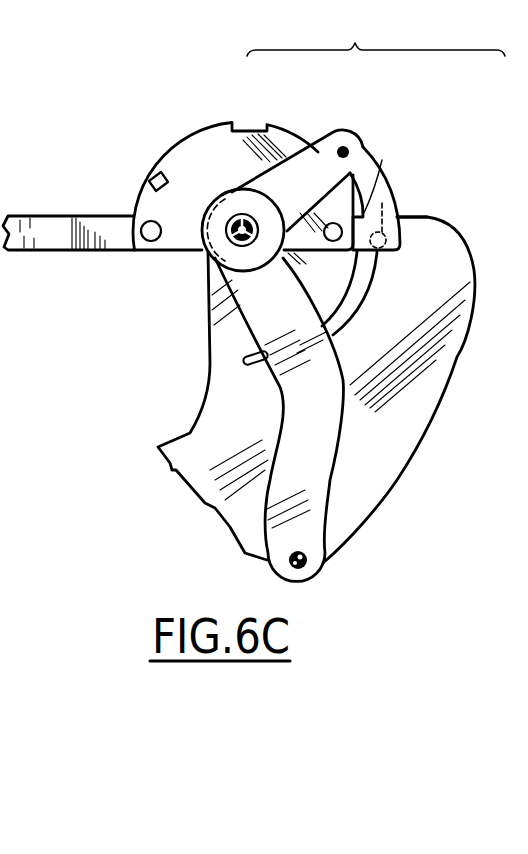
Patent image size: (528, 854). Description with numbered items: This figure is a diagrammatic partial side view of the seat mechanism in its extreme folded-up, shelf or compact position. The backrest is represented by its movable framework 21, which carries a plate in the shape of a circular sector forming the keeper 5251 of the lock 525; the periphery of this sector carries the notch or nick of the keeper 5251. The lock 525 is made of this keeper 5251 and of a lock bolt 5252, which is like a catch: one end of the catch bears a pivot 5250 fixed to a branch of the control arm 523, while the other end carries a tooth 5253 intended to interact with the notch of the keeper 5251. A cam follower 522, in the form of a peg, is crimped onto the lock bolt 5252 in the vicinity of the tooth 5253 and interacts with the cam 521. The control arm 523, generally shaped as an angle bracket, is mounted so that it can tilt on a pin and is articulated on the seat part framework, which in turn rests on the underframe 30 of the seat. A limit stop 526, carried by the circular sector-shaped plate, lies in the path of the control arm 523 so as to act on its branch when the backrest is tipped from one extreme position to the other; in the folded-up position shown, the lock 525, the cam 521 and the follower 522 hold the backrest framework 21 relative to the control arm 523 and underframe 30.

The movable framework 21 is at (50, 230).
The underframe 30 is at (343, 523).
The cam 521 is at (373, 273).
The cam follower 522 is at (383, 203).
The control arm 523 is at (263, 297).
The lock 525 is at (368, 129).
The limit stop 526 is at (157, 175).
The pivot 5250 is at (338, 133).
The keeper 5251 is at (250, 125).
The lock bolt 5252 is at (372, 182).
The tooth 5253 is at (388, 172).